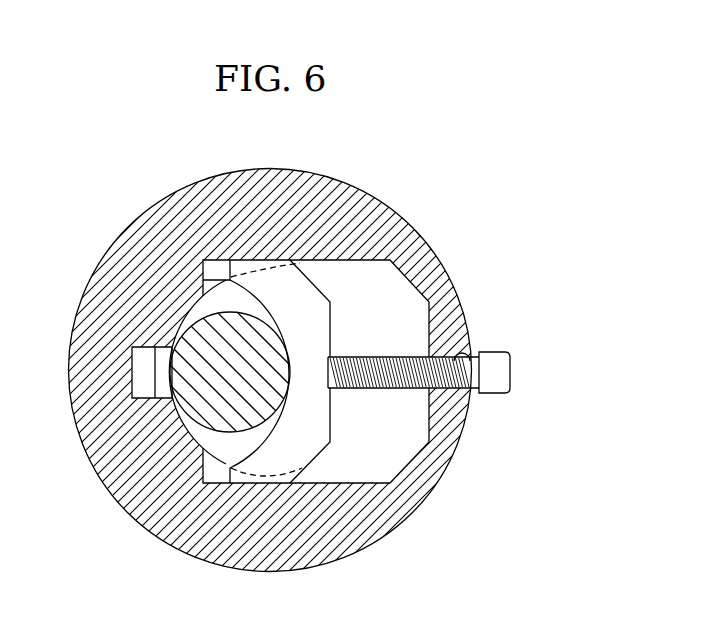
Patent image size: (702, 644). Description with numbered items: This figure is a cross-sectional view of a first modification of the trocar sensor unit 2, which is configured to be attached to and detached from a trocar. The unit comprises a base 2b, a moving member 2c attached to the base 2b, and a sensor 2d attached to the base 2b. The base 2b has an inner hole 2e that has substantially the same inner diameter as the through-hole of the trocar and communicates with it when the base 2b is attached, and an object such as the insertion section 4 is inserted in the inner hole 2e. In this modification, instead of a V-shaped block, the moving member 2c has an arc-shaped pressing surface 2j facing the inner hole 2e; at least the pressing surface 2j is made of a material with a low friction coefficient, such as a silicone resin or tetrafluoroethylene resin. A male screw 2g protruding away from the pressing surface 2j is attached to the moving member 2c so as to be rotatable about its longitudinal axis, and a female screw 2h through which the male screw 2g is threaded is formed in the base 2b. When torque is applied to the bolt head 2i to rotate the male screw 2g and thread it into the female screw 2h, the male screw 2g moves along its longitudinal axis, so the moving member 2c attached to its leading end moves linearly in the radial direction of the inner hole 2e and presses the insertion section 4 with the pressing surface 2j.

The trocar sensor unit 2 is at (522, 178).
The base 2b is at (418, 232).
The moving member 2c is at (334, 325).
The sensor 2d is at (130, 372).
The inner hole 2e is at (345, 427).
The male screw 2g is at (470, 395).
The female screw 2h is at (463, 353).
The bolt head 2i is at (512, 371).
The pressing surface 2j is at (203, 297).
The insertion section 4 is at (222, 433).